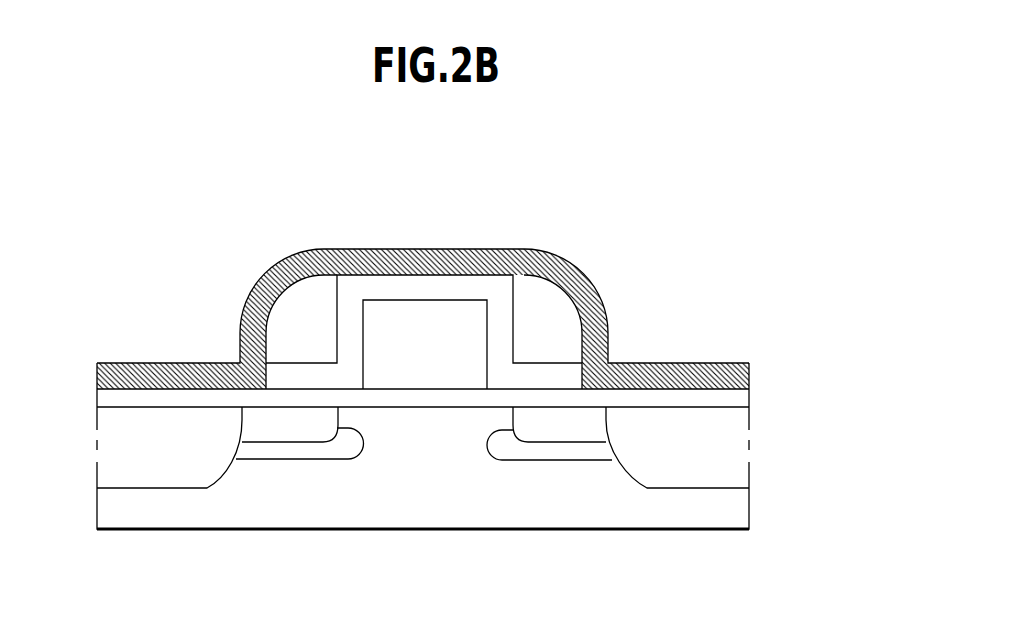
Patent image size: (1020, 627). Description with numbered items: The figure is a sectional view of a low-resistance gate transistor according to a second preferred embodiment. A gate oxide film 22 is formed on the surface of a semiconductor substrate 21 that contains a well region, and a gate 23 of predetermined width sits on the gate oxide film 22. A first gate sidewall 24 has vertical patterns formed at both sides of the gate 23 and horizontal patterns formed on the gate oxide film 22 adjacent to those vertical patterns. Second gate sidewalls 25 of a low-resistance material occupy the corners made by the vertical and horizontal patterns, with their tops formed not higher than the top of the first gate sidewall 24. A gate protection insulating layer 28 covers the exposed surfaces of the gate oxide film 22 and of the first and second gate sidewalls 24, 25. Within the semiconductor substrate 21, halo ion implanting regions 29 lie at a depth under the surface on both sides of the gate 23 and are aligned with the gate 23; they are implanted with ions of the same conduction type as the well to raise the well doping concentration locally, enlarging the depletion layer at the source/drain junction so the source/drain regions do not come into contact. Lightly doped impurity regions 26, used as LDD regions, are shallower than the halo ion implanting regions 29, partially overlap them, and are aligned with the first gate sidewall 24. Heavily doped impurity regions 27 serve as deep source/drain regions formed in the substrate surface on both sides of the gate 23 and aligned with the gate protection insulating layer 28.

The semiconductor substrate 21 is at (750, 514).
The gate oxide film 22 is at (742, 402).
The gate 23 is at (407, 322).
The first gate sidewall 24 is at (460, 288).
The second gate sidewalls 25 is at (300, 318).
The lightly doped impurity regions 26 is at (568, 435).
The heavily doped impurity regions 27 is at (647, 475).
The gate protection insulating layer 28 is at (750, 375).
The halo ion implanting regions 29 is at (517, 447).